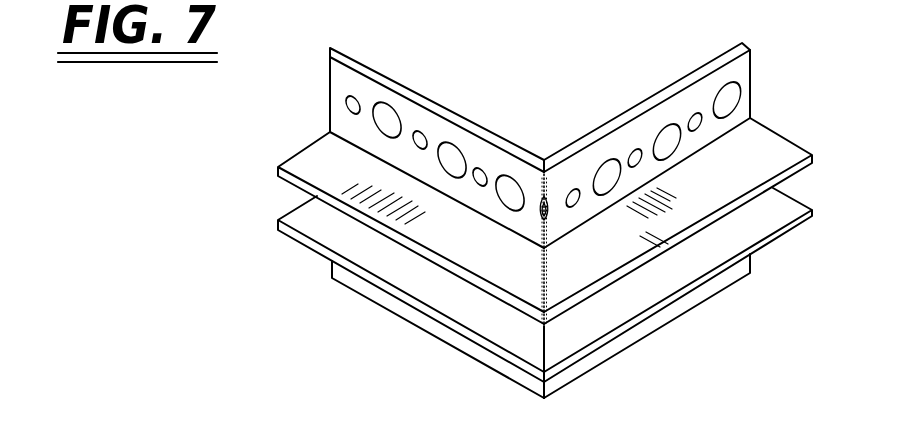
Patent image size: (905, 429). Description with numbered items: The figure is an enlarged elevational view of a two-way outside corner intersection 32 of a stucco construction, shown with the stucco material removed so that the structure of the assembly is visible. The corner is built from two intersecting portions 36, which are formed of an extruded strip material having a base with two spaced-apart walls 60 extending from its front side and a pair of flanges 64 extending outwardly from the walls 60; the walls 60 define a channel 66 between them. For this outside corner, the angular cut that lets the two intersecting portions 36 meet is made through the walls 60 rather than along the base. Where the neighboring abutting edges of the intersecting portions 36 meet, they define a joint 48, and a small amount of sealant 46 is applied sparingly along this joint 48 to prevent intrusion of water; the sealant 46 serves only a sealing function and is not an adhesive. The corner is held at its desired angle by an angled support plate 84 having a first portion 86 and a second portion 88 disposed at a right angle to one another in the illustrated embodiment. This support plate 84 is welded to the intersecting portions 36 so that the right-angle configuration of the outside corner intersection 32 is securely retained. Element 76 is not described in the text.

The two-way outside corner intersection 32 is at (663, 372).
The intersecting portions 36 is at (509, 94).
The sealant 46 is at (548, 289).
The joint 48 is at (545, 349).
The walls 60 is at (318, 157).
The flanges 64 is at (382, 79).
The channel 66 is at (726, 232).
The mating flange surface 76 is at (795, 229).
The angled support plate 84 is at (526, 141).
The first portion 86 is at (478, 120).
The second portion 88 is at (590, 127).